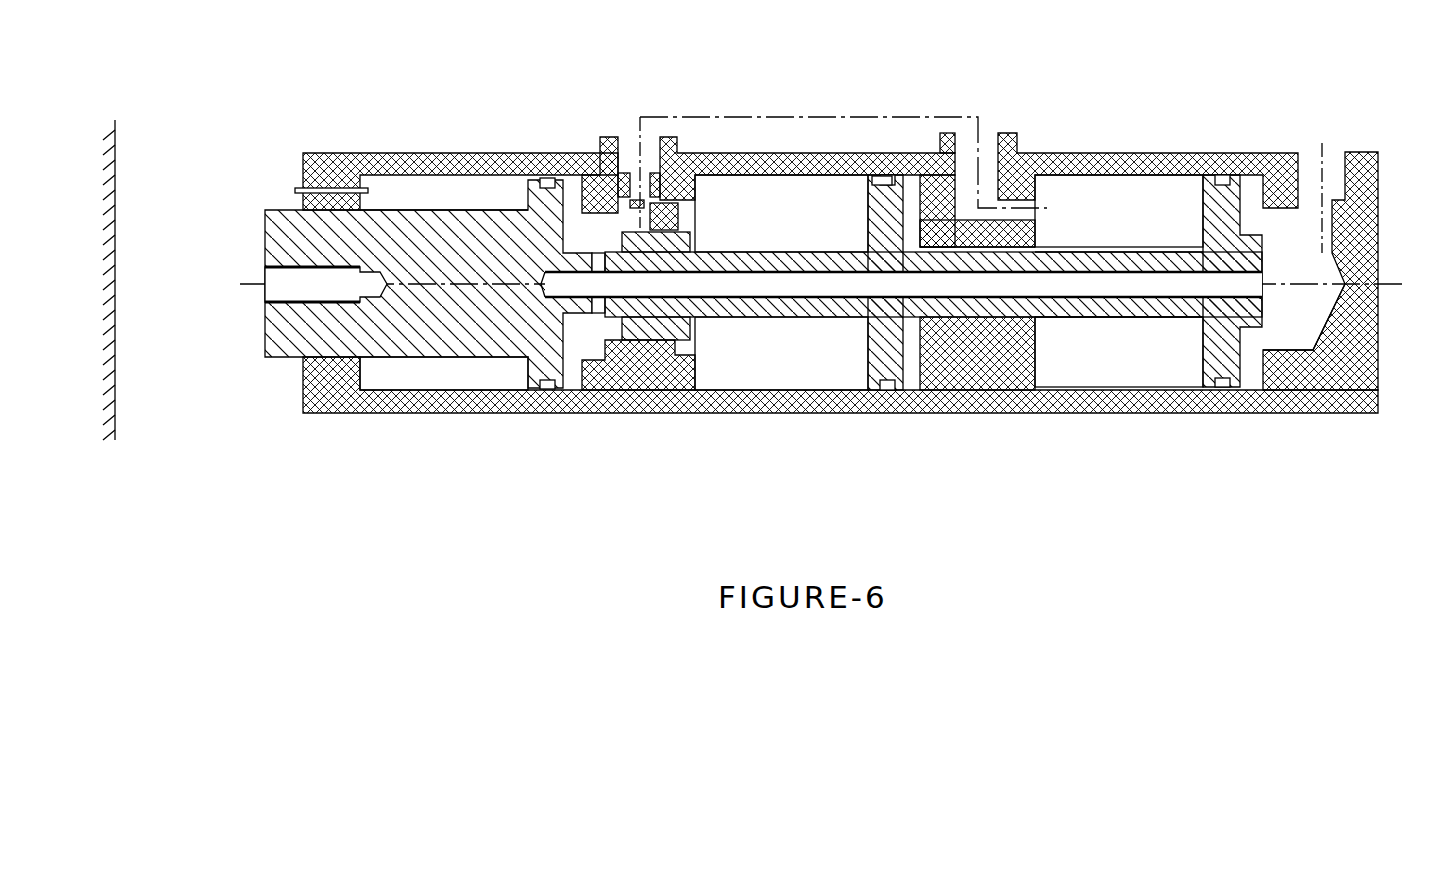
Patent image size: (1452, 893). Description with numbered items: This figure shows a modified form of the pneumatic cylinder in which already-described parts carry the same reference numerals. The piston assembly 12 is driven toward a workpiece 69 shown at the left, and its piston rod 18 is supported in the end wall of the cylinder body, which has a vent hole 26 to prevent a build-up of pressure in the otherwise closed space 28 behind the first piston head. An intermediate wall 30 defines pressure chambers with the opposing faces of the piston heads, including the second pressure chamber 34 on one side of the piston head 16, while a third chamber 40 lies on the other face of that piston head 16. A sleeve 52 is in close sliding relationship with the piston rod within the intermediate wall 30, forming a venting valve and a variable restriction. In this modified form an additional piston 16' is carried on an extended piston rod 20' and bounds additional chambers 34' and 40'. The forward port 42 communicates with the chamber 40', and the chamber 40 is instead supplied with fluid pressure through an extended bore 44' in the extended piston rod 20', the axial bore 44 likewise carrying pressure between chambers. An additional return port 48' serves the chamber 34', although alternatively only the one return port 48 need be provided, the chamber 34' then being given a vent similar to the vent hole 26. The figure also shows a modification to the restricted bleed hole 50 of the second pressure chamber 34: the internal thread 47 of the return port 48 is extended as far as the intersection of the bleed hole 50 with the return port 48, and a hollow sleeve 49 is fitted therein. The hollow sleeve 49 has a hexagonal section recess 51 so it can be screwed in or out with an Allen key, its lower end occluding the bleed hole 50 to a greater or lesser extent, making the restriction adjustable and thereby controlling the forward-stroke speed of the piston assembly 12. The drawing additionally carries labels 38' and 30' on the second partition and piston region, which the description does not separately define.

The workpiece 69 is at (152, 270).
The vent hole 26 is at (276, 167).
The piston assembly 12 is at (395, 296).
The piston rod 18 is at (412, 137).
The sleeve 52 is at (460, 136).
The hollow sleeve 49 is at (586, 138).
The return port 48 is at (684, 145).
The hexagonal section recess 51 is at (667, 147).
The internal thread 47 is at (807, 161).
The bleed hole 50 is at (727, 226).
The piston head 16 is at (885, 101).
The additional return port 48' is at (866, 113).
The extended piston rod 20' is at (1041, 154).
The second piston head 38' is at (1225, 202).
The piston 16' is at (1165, 134).
The forward port 42 is at (1353, 204).
The closed space 28 is at (416, 430).
The intermediate wall 30 is at (605, 422).
The second pressure chamber 34 is at (766, 339).
The axial bore 44 is at (901, 301).
The third chamber 40 is at (932, 339).
The second partition wall 30' is at (1021, 339).
The chamber 34' is at (1151, 339).
The extended bore 44' is at (1119, 311).
The chamber 40' is at (1349, 393).